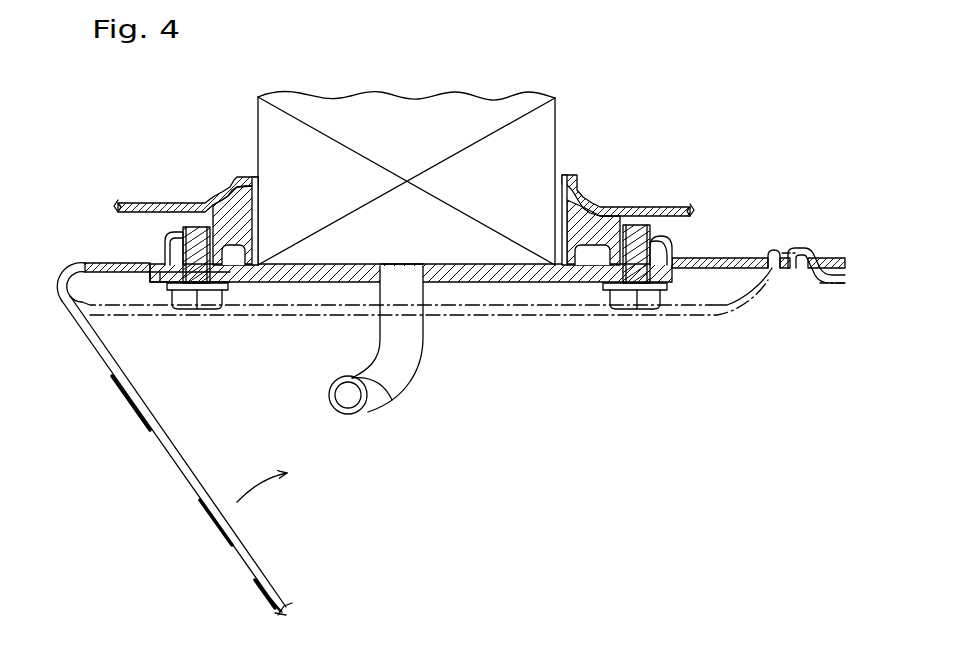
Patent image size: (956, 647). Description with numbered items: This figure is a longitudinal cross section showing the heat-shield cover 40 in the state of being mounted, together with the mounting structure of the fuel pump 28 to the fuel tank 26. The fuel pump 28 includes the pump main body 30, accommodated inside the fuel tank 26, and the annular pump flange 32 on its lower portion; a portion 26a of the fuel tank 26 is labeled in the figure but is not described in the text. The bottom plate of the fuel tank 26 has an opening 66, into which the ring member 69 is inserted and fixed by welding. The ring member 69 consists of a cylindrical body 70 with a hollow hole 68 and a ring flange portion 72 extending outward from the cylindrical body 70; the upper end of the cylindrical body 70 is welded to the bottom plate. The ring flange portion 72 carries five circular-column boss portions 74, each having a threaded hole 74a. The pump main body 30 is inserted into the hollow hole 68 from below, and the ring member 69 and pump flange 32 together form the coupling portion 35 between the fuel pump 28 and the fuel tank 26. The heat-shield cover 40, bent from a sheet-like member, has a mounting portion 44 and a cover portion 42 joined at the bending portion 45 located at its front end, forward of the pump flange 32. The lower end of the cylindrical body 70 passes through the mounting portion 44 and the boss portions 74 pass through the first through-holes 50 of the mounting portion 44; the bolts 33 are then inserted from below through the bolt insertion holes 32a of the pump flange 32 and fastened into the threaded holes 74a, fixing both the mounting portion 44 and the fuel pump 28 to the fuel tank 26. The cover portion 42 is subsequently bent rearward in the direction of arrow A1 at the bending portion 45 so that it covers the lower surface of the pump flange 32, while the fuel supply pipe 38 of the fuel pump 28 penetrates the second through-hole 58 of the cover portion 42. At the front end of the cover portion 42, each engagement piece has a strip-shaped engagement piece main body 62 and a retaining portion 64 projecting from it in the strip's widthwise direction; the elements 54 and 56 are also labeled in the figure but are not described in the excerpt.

The fuel tank 26 is at (186, 174).
The flange of inner panel 26a is at (178, 203).
The fuel pump 28 is at (411, 210).
The pump main body 30 is at (497, 100).
The pump flange 32 is at (502, 285).
The bolt insertion holes 32a is at (203, 280).
The bolts 33 is at (196, 302).
The coupling portion 35 is at (628, 193).
The fuel supply pipe 38 is at (407, 388).
The heat-shield cover 40 is at (438, 399).
The cover portion 42 is at (180, 468).
The mounting portion 44 is at (745, 260).
The bending portion 45 is at (65, 285).
The first through-holes 50 is at (166, 284).
The hook portion 54 is at (773, 270).
The clip portion 56 is at (800, 252).
The second through-hole 58 is at (252, 578).
The engagement piece main body 62 is at (817, 284).
The retaining portion 64 is at (788, 252).
The opening 66 is at (243, 178).
The hollow hole 68 is at (262, 212).
The ring member 69 is at (604, 217).
The cylindrical body 70 is at (575, 194).
The ring flange portion 72 is at (668, 242).
The boss portions 74 is at (172, 248).
The threaded hole 74a is at (188, 262).
The arrow A1 is at (265, 497).